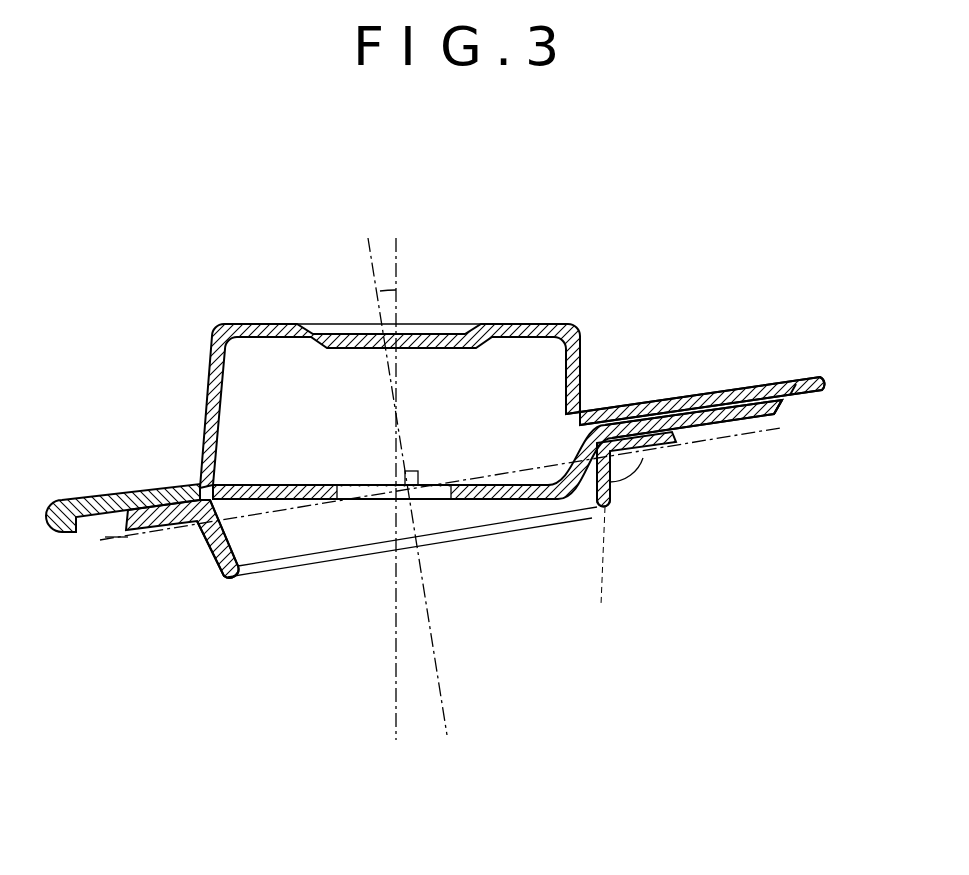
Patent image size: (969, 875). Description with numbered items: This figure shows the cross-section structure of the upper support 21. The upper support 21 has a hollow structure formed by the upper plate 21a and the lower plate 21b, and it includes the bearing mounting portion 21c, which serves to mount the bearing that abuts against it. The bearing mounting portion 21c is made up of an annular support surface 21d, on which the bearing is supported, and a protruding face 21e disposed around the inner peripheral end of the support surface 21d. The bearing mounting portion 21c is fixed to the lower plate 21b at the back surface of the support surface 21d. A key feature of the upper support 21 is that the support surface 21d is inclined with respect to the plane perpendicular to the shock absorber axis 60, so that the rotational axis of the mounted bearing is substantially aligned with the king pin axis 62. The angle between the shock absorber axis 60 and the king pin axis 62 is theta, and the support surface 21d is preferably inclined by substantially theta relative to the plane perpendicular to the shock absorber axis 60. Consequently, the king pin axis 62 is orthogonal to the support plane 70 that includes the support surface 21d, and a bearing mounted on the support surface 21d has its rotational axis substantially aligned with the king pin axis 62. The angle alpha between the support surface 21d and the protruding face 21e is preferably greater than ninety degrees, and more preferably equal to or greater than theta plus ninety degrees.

The upper support 21 is at (588, 287).
The upper plate 21a is at (688, 392).
The lower plate 21b is at (668, 440).
The bearing mounting portion 21c is at (762, 384).
The support surface 21d is at (168, 538).
The protruding face 21e is at (212, 560).
The shock absorber axis 60 is at (398, 250).
The king pin axis 62 is at (366, 248).
The support plane 70 is at (118, 540).